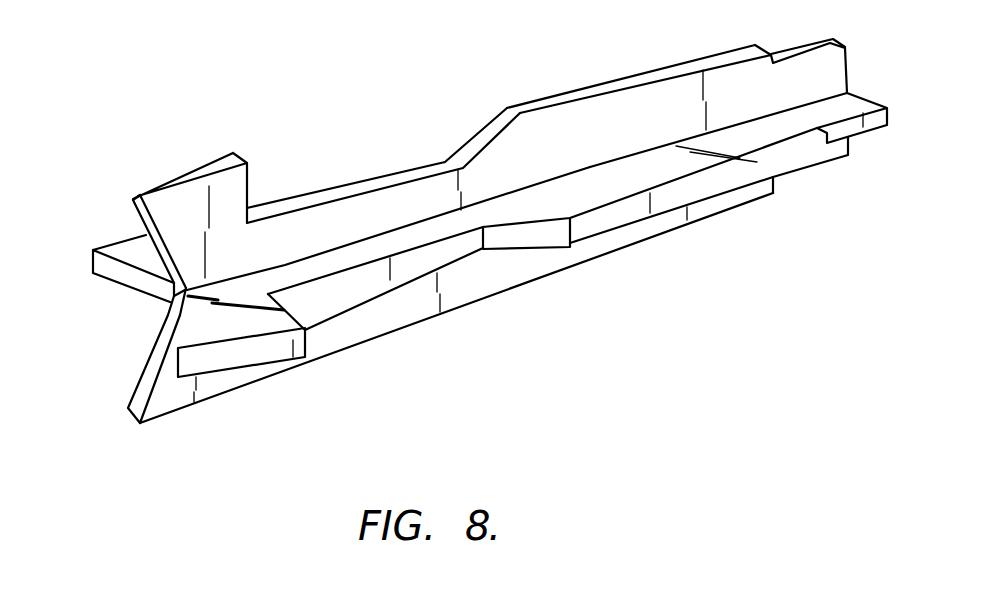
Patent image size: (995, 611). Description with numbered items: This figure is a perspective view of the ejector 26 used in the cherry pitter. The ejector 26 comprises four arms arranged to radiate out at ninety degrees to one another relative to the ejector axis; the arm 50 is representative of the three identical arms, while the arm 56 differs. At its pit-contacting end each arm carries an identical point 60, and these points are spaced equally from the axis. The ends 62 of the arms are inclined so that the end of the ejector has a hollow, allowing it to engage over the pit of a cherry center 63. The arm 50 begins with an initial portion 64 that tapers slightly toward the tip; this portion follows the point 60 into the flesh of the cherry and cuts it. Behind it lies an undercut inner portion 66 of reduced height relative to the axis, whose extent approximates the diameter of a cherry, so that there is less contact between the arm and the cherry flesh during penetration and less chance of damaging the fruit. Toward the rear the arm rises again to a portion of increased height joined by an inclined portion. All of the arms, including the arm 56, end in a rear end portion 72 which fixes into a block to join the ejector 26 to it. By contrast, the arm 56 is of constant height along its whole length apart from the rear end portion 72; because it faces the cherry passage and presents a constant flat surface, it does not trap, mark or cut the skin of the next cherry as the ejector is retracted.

The ejector 26 is at (372, 216).
The arm 50 is at (624, 113).
The arm 56 is at (500, 277).
The point 60 is at (134, 200).
The end 62 is at (145, 237).
The cherry center 63 is at (128, 322).
The initial portion 64 is at (225, 315).
The undercut inner portion 66 is at (308, 172).
The rear end portion 72 is at (800, 170).